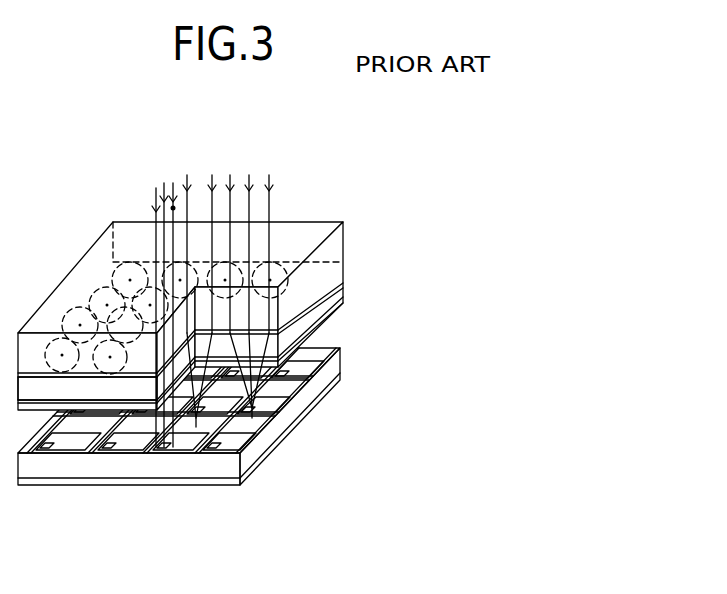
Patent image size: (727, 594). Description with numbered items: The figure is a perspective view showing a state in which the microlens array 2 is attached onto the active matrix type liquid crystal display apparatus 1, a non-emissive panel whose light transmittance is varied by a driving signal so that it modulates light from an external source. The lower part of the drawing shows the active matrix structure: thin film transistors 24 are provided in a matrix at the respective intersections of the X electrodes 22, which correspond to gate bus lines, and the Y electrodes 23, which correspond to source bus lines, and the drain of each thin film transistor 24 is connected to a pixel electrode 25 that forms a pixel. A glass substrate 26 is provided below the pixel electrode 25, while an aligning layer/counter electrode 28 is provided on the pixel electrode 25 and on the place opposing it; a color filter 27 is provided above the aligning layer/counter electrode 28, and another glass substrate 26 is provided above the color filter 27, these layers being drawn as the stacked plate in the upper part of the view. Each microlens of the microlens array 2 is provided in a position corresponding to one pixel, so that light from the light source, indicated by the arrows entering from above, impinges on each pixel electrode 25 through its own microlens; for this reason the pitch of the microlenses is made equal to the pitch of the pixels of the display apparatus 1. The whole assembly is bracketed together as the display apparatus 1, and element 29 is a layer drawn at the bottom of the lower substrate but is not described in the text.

The active matrix type liquid crystal display apparatus 1 is at (603, 568).
The microlens array 2 is at (232, 335).
The X electrode 22 is at (297, 433).
The Y electrode 23 is at (153, 448).
The thin film transistor 24 is at (272, 378).
The pixel electrode 25 is at (228, 459).
The glass substrate 26 is at (347, 284).
The color filter 27 is at (346, 297).
The aligning layer/counter electrode 28 is at (346, 303).
The polarizer 29 is at (258, 472).